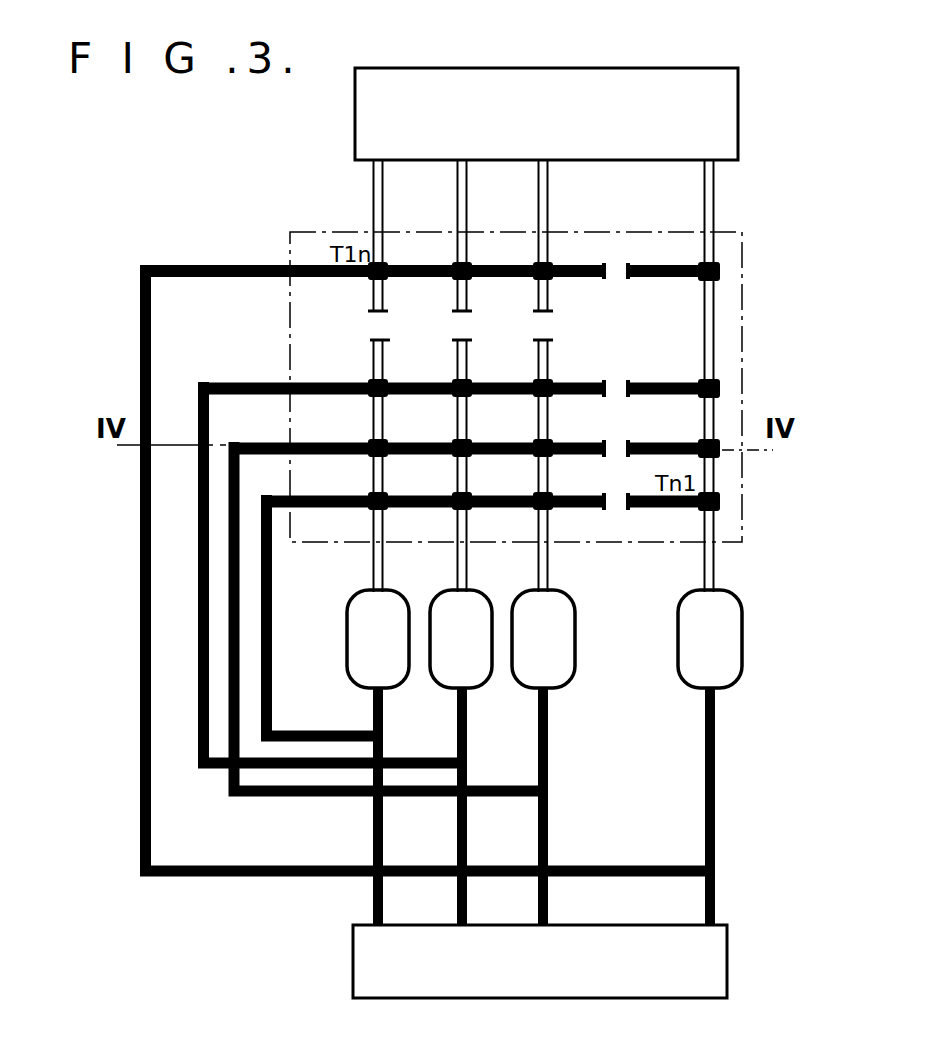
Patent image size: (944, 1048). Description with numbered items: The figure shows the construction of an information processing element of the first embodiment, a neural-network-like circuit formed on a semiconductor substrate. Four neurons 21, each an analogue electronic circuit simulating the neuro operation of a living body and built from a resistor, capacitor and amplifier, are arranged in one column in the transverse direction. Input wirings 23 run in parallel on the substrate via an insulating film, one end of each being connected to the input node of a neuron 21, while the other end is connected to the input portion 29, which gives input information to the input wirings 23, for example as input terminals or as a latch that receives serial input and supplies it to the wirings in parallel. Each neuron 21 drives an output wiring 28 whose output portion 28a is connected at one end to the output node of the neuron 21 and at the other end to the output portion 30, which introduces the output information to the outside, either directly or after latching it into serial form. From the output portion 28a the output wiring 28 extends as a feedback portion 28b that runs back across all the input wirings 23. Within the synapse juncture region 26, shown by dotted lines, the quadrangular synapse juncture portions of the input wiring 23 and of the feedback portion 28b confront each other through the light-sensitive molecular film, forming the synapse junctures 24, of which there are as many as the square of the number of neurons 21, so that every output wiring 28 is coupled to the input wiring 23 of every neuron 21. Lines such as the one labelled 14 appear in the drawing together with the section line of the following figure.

The gate line 14 is at (424, 262).
The neuron 21 is at (408, 600).
The input wiring 23 is at (370, 356).
The synapse juncture 24 is at (372, 279).
The synapse juncture region 26 is at (752, 258).
The output wiring 28 is at (140, 578).
The output portion 28a is at (548, 745).
The feedback portion 28b is at (427, 343).
The input portion 29 is at (738, 107).
The output portion 30 is at (727, 947).